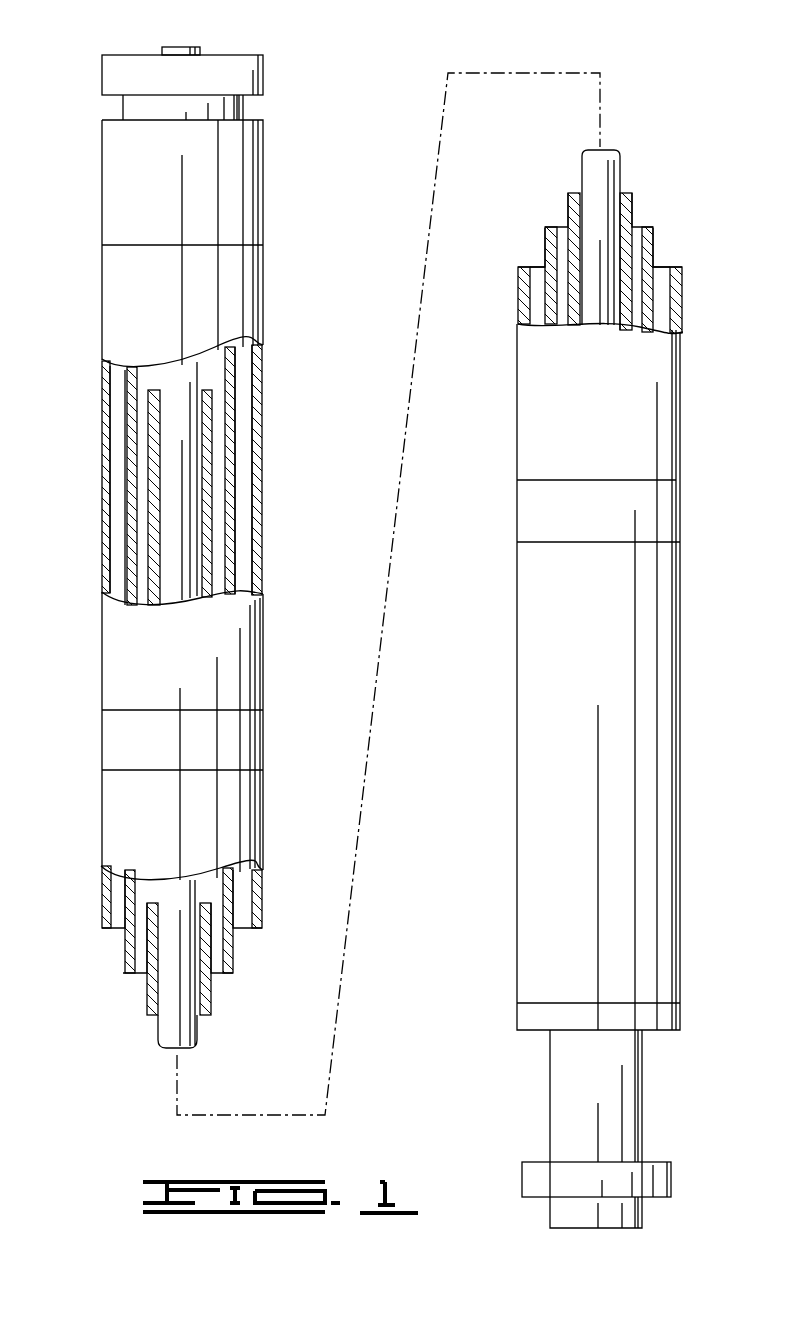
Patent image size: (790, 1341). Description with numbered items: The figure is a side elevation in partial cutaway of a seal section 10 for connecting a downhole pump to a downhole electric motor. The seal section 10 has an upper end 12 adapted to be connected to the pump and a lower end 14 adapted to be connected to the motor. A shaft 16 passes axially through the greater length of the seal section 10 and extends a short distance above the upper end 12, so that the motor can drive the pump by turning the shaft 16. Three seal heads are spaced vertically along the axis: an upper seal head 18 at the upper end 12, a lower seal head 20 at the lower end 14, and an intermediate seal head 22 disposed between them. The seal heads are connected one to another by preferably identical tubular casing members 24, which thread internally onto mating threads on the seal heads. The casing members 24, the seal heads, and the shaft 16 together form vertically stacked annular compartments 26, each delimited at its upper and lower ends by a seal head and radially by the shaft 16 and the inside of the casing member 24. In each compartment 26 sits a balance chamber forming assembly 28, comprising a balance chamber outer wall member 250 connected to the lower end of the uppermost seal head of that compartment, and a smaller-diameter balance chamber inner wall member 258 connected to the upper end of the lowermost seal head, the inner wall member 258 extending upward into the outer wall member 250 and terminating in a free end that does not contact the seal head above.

The seal section 10 is at (75, 76).
The upper end 12 is at (229, 53).
The lower end 14 is at (585, 1232).
The shaft 16 is at (190, 393).
The upper seal head 18 is at (270, 180).
The lower seal head 20 is at (667, 669).
The intermediate seal head 22 is at (264, 728).
The tubular casing member 24 is at (246, 304).
The annular compartment 26 is at (242, 430).
The balance chamber forming assembly 28 is at (240, 378).
The balance chamber outer wall member 250 is at (231, 468).
The balance chamber inner wall member 258 is at (209, 530).